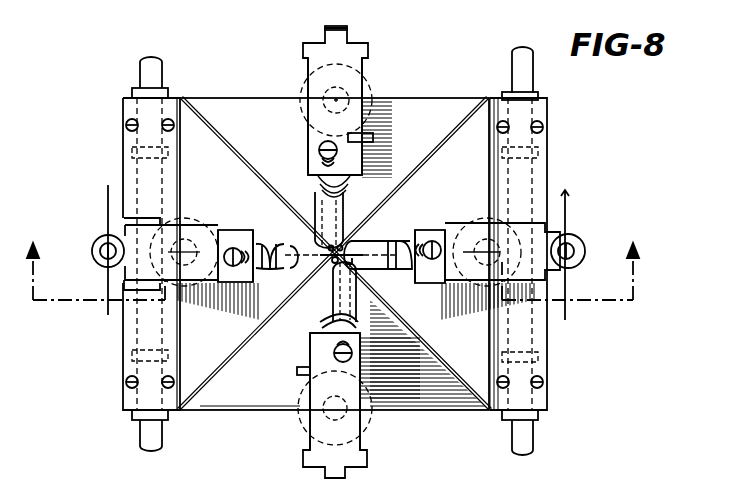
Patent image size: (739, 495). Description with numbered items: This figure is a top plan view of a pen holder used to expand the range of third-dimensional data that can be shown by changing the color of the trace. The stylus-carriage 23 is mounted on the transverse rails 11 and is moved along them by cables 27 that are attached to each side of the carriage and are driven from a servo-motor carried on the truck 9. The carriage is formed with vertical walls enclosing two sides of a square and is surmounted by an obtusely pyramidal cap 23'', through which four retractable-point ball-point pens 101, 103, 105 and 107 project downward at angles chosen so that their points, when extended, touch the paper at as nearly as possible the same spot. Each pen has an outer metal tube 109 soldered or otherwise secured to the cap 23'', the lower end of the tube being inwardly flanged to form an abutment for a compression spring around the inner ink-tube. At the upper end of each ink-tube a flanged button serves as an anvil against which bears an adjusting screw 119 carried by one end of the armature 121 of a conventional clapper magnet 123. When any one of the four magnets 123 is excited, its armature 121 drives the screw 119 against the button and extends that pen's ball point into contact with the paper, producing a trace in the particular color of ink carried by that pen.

The truck 9 is at (333, 265).
The transverse rails 11 is at (140, 445).
The stylus-carriage 23 is at (134, 254).
The obtusely pyramidal cap 23'' is at (370, 245).
The cables 27 is at (567, 209).
The retractable-point ball-point pen 101 is at (316, 252).
The retractable-point ball-point pen 103 is at (333, 228).
The retractable-point ball-point pen 105 is at (354, 264).
The retractable-point ball-point pen 107 is at (334, 290).
The outer metal tube 109 is at (316, 190).
The adjusting screw 119 is at (318, 164).
The armature 121 is at (364, 90).
The clapper magnet 123 is at (303, 98).